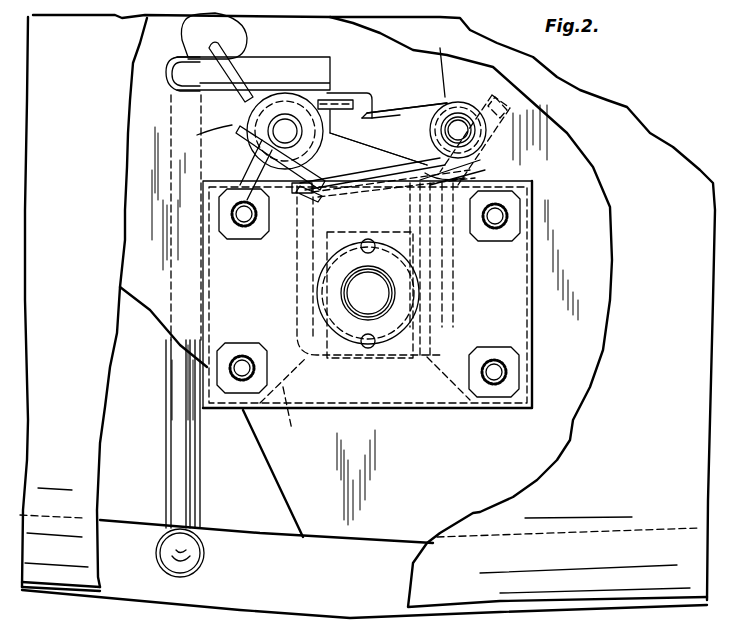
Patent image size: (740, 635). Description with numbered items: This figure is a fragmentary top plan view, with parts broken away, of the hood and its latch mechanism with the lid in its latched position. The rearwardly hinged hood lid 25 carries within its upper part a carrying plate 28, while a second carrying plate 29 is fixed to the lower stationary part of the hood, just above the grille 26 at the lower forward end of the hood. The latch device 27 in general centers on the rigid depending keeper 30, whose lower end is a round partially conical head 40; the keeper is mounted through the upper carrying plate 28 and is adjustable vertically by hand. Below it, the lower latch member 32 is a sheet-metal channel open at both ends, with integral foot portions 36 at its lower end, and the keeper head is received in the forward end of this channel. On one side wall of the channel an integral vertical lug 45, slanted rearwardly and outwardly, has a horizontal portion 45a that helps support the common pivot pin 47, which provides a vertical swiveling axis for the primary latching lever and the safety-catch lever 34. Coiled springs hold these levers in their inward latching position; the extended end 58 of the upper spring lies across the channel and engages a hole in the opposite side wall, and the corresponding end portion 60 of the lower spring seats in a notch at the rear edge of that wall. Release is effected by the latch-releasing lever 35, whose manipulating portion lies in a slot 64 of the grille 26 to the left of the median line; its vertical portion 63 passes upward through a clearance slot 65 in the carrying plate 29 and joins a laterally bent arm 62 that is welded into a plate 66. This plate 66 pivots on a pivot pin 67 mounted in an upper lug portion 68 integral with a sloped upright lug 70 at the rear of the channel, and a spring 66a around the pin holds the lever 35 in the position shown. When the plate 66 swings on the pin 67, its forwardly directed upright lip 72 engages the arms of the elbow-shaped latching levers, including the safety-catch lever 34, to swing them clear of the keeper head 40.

The hood lid 25 is at (632, 127).
The grille 26 is at (263, 606).
The latch device 27 is at (449, 90).
The carrying plate 28 is at (585, 367).
The carrying plate 29 is at (137, 268).
The keeper 30 is at (378, 305).
The lower latch member 32 is at (366, 373).
The safety-catch lever 34 is at (426, 96).
The latch-releasing lever 35 is at (183, 430).
The foot portions 36 is at (287, 408).
The head 40 is at (383, 347).
The lug 45 is at (470, 162).
The horizontal portion 45a is at (470, 103).
The pivot pin 47 is at (445, 130).
The extended end of upper spring 58 is at (375, 270).
The end portion of lower spring 60 is at (378, 179).
The laterally bent arm 62 is at (300, 75).
The vertical portion 63 is at (246, 132).
The slot 64 is at (150, 565).
The clearance slot 65 is at (195, 35).
The plate 66 is at (245, 63).
The spring 66a is at (338, 100).
The pivot pin 67 is at (262, 147).
The upper lug portion 68 is at (202, 137).
The upright lug 70 is at (283, 190).
The lip 72 is at (366, 137).